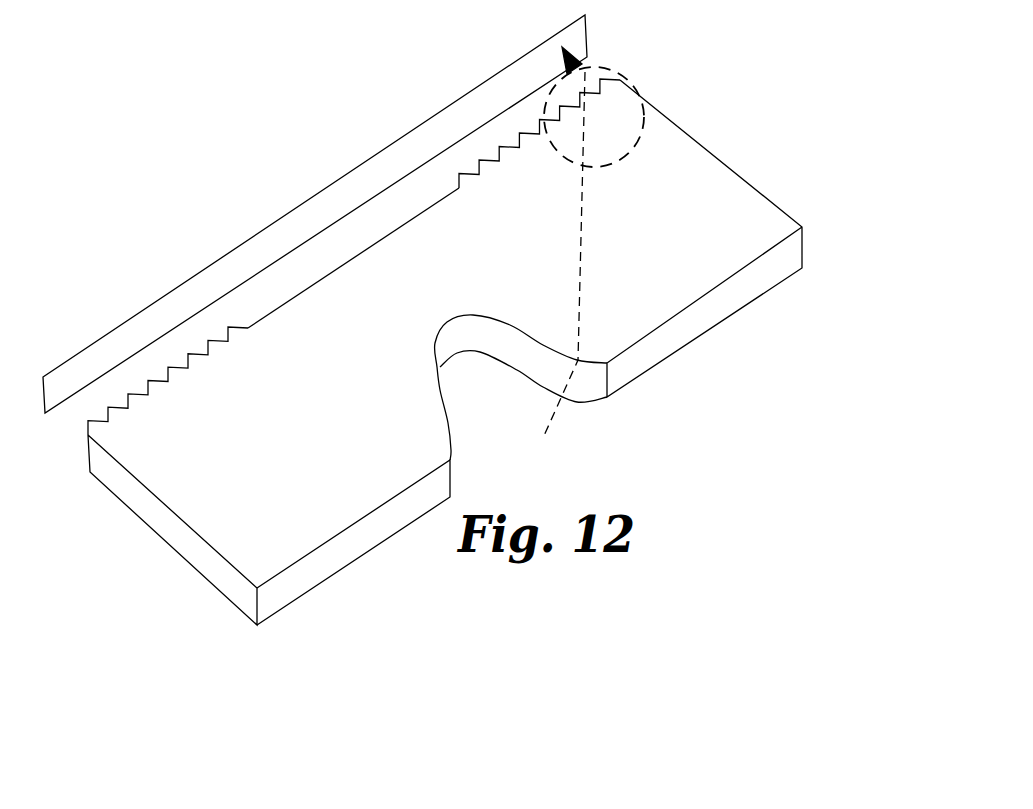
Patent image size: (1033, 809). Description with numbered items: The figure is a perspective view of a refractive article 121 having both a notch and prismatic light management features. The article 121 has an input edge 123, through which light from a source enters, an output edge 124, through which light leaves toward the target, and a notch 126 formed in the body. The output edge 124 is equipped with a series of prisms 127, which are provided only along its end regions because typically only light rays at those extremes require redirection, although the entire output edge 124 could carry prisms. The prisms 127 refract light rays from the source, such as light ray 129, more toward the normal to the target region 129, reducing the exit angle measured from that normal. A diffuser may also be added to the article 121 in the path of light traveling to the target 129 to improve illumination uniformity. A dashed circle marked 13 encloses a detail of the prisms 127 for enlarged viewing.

The refractive article 121 is at (497, 334).
The input edge 123 is at (727, 293).
The output edge 124 is at (270, 302).
The notch 126 is at (590, 387).
The prisms 127 is at (490, 157).
The light ray / target region 129 is at (338, 198).
The detail circle for FIG. 13 is at (620, 76).